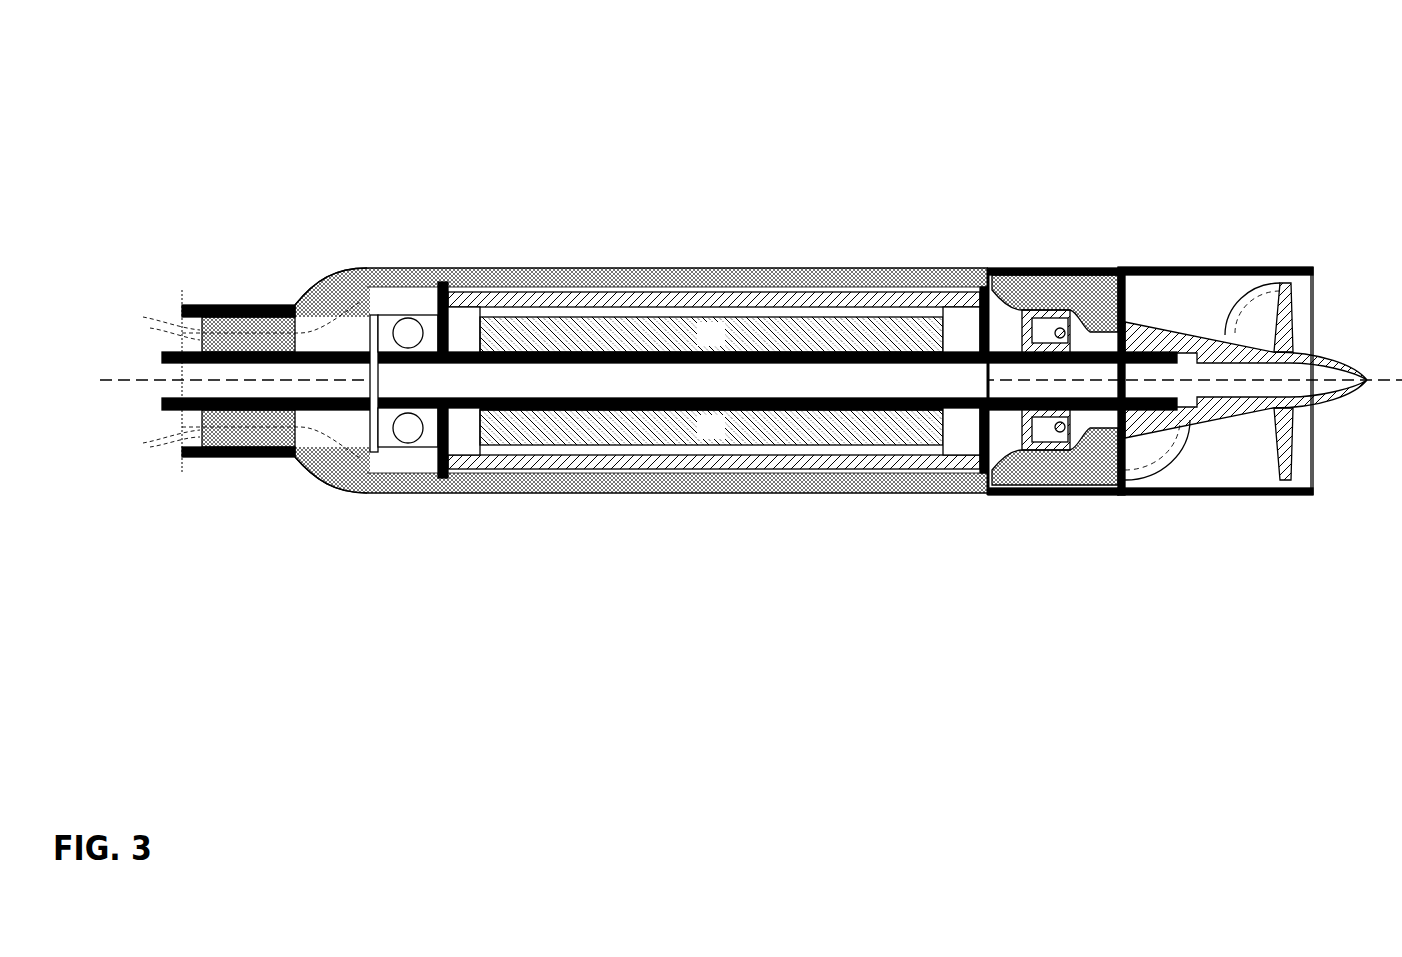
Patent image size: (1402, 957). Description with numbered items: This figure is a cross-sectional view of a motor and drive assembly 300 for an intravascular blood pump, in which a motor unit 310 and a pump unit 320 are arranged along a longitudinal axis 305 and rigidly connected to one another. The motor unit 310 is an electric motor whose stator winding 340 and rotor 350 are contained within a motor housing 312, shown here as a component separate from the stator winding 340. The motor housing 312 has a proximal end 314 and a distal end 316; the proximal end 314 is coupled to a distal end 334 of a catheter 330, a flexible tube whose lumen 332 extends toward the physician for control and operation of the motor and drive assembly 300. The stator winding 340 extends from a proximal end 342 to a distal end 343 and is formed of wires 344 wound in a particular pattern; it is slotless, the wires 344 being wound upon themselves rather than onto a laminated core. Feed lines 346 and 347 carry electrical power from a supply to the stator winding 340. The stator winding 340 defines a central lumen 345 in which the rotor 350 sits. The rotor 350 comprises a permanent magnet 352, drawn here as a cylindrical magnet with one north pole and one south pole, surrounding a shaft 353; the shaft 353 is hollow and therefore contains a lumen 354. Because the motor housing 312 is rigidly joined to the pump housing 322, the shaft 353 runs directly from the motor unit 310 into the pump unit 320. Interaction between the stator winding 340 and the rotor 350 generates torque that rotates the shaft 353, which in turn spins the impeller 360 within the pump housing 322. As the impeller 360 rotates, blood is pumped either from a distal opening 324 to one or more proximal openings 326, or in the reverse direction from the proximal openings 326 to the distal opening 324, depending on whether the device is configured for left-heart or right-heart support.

The motor and drive assembly 300 is at (278, 165).
The longitudinal axis 305 is at (663, 380).
The motor unit 310 is at (743, 497).
The motor housing 312 is at (802, 268).
The proximal end 314 is at (298, 307).
The distal end 316 is at (1113, 312).
The pump unit 320 is at (1223, 265).
The pump housing 322 is at (1135, 495).
The distal opening 324 is at (1318, 458).
The proximal openings 326 is at (1113, 275).
The catheter 330 is at (250, 304).
The lumen 332 is at (203, 382).
The distal end 334 is at (285, 460).
The stator winding 340 is at (560, 286).
The proximal end 342 is at (452, 290).
The distal end 343 is at (980, 402).
The wires 344 is at (573, 467).
The central lumen 345 is at (468, 435).
The feed line 346 is at (216, 310).
The feed line 347 is at (245, 435).
The rotor 350 is at (948, 335).
The permanent magnet 352 is at (897, 438).
The shaft 353 is at (962, 398).
The lumen 354 is at (950, 398).
The impeller 360 is at (1190, 448).